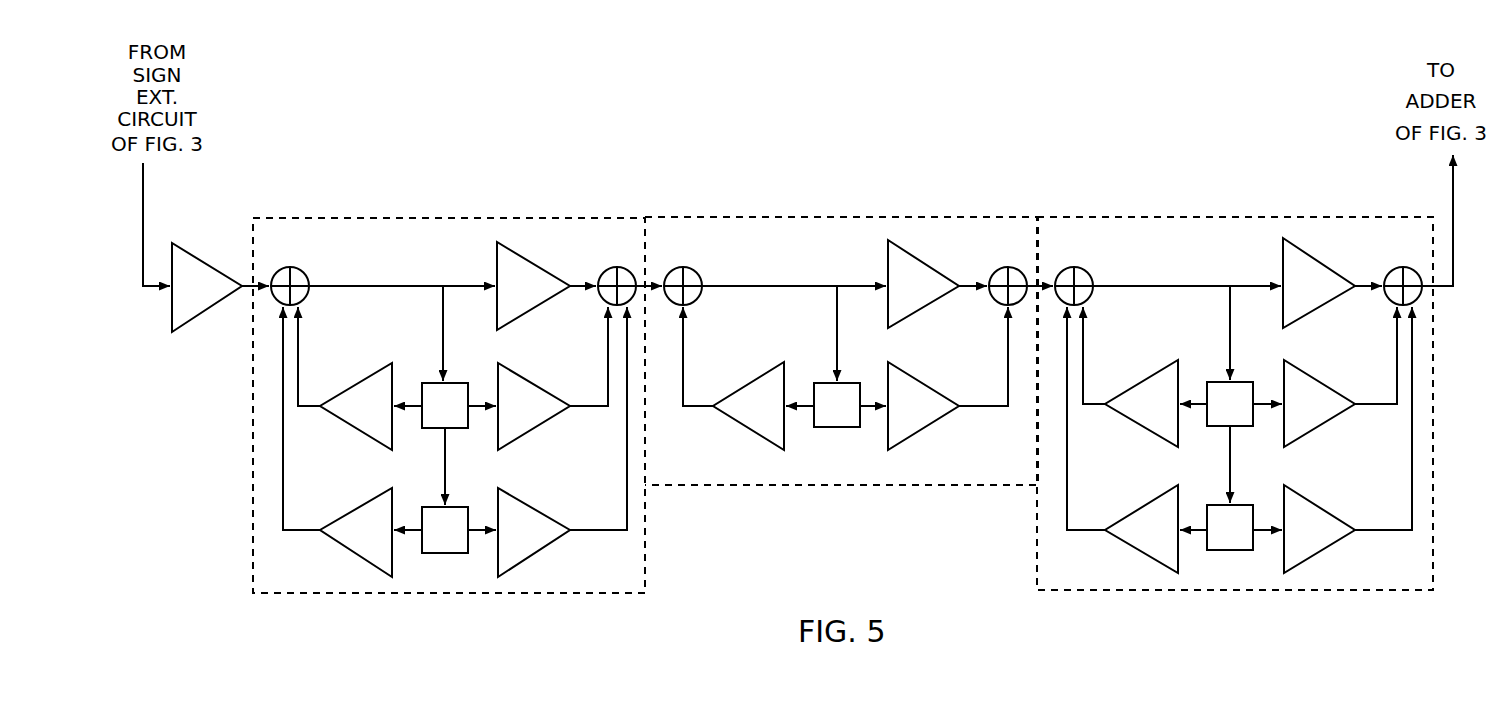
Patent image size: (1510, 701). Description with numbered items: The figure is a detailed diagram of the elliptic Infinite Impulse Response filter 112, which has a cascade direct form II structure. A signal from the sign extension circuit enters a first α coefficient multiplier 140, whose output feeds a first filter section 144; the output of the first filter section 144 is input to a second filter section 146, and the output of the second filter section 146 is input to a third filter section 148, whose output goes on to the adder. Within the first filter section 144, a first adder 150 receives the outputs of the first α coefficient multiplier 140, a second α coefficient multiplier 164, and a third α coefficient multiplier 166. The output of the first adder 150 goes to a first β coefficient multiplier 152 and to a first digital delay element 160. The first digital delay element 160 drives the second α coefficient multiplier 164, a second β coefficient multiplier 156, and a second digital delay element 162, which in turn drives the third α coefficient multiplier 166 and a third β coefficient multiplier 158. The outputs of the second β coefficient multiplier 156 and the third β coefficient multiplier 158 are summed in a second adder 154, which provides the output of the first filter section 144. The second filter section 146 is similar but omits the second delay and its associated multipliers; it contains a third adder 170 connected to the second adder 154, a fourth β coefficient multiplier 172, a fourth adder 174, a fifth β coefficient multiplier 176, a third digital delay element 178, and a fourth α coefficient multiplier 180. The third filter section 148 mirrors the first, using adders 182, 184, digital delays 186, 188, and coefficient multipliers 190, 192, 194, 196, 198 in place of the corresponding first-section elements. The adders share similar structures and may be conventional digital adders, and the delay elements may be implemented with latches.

The elliptic Infinite Impulse Response (IIR) filter 112 is at (633, 92).
The first α coefficient multiplier 140 is at (201, 257).
The first filter section 144 is at (444, 215).
The second filter section 146 is at (809, 215).
The third filter section 148 is at (1231, 212).
The first adder 150 is at (292, 267).
The first β coefficient multiplier 152 is at (526, 260).
The second adder 154 is at (598, 303).
The second β coefficient multiplier 156 is at (538, 387).
The third β coefficient multiplier 158 is at (538, 507).
The first digital delay element 160 is at (428, 381).
The second digital delay element 162 is at (428, 504).
The second α coefficient multiplier 164 is at (350, 389).
The third α coefficient multiplier 166 is at (355, 507).
The third adder 170 is at (682, 267).
The fourth β coefficient multiplier 172 is at (918, 256).
The fourth adder 174 is at (989, 303).
The fifth β coefficient multiplier 176 is at (929, 384).
The third digital delay element 178 is at (820, 381).
The fourth α coefficient multiplier 180 is at (743, 386).
The adder 182 is at (1075, 266).
The adder 184 is at (1383, 302).
The digital delay 186 is at (1213, 377).
The digital delay 188 is at (1213, 502).
The coefficient multiplier β20 190 is at (1313, 256).
The coefficient multiplier β21 192 is at (1323, 384).
The coefficient multiplier β22 194 is at (1324, 509).
The coefficient multiplier -α21 196 is at (1136, 382).
The coefficient multiplier -α22 198 is at (1139, 506).